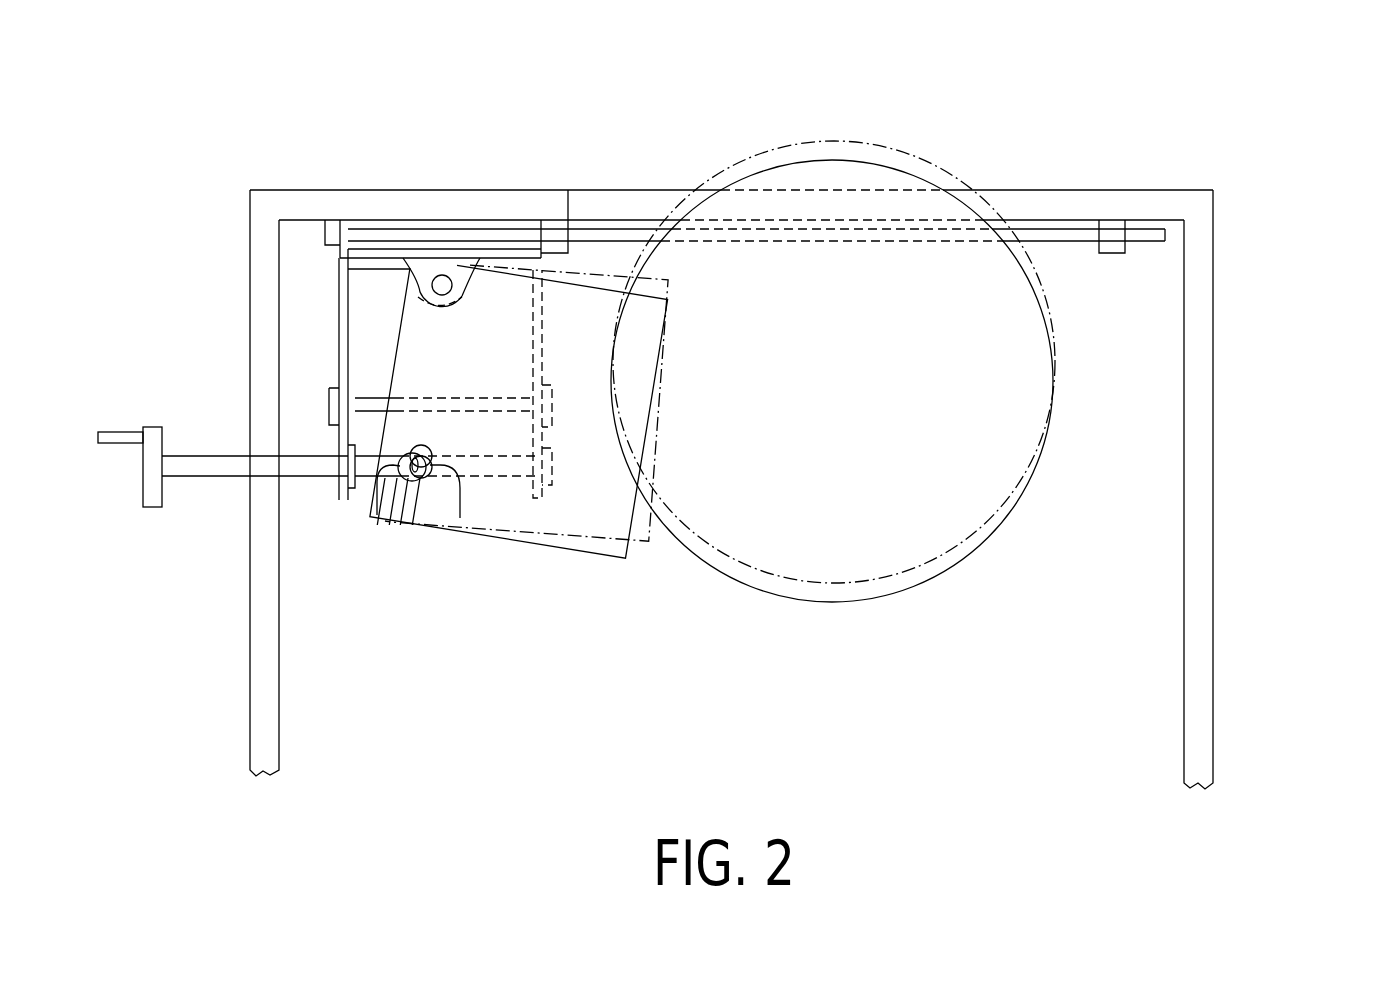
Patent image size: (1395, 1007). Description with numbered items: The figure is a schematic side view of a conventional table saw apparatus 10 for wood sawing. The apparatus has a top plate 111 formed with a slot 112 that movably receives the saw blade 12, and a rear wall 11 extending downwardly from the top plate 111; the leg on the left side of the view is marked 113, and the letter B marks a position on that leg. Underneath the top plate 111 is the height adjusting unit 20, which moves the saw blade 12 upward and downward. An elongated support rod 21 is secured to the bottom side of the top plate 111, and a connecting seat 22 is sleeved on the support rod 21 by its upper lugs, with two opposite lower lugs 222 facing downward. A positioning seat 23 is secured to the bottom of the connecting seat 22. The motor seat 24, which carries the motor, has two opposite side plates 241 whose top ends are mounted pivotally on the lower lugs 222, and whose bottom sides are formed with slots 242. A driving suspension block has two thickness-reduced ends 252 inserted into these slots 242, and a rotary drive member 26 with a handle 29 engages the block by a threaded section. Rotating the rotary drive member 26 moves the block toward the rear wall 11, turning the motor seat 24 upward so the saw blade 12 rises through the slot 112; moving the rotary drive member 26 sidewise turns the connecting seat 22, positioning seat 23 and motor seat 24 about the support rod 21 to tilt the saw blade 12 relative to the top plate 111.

The table saw apparatus 10 is at (726, 426).
The rear wall 11 is at (1211, 437).
The top plate 111 is at (1155, 190).
The slot 112 is at (1070, 198).
The left upright of frame 113 is at (258, 392).
The saw blade 12 is at (910, 155).
The height adjusting unit 20 is at (150, 507).
The support rod 21 is at (603, 235).
The connecting seat 22 is at (338, 262).
The lower lugs 222 is at (410, 268).
The positioning seat 23 is at (343, 338).
The motor seat 24 is at (565, 552).
The side plates 241 is at (453, 270).
The slots 242 is at (398, 490).
The thickness-reduced ends 252 is at (383, 505).
The rotary drive member 26 is at (213, 470).
The handle 29 is at (112, 444).
The position B is at (247, 668).